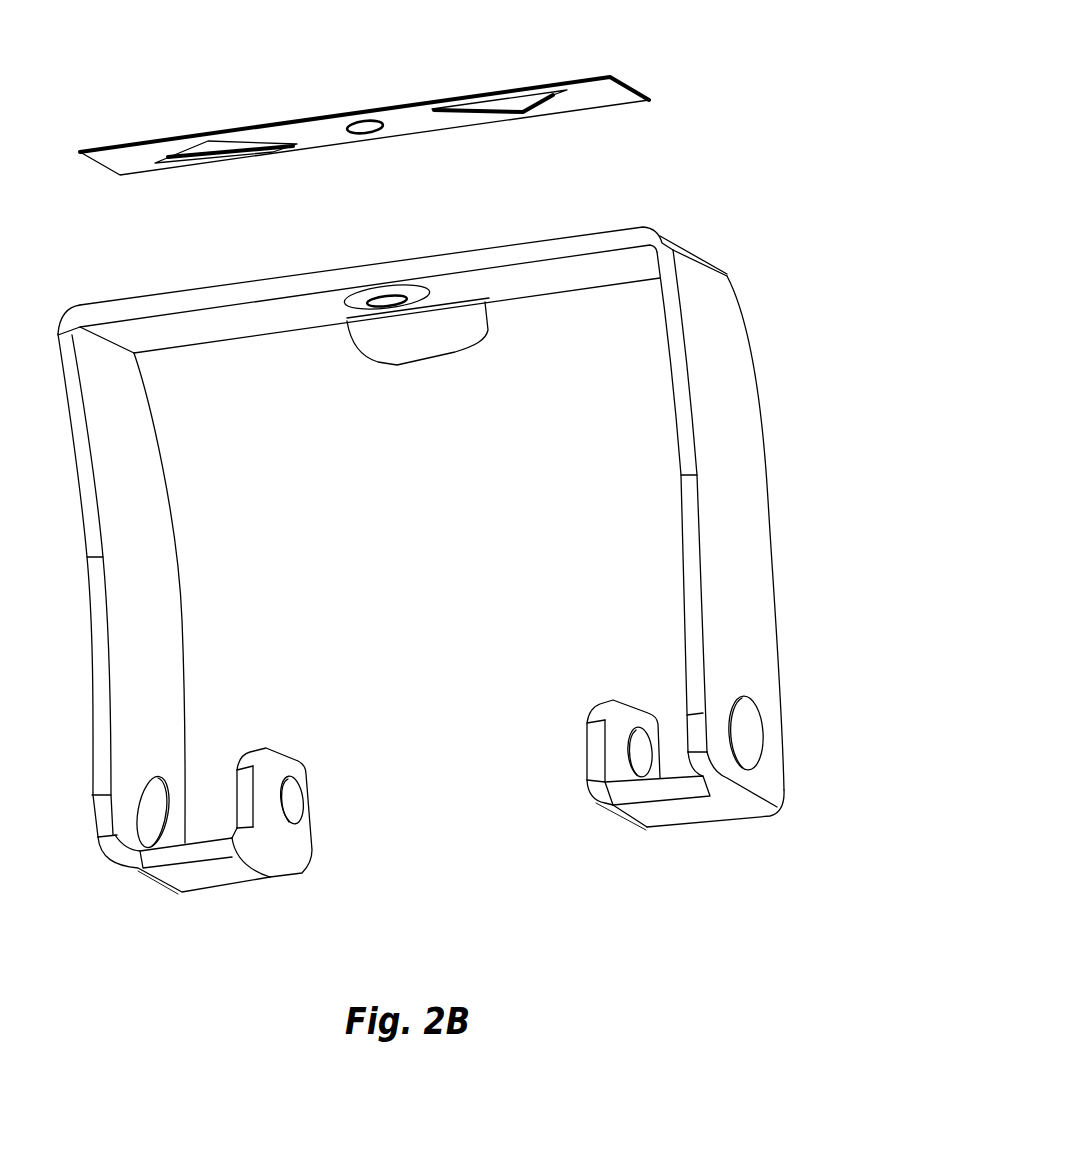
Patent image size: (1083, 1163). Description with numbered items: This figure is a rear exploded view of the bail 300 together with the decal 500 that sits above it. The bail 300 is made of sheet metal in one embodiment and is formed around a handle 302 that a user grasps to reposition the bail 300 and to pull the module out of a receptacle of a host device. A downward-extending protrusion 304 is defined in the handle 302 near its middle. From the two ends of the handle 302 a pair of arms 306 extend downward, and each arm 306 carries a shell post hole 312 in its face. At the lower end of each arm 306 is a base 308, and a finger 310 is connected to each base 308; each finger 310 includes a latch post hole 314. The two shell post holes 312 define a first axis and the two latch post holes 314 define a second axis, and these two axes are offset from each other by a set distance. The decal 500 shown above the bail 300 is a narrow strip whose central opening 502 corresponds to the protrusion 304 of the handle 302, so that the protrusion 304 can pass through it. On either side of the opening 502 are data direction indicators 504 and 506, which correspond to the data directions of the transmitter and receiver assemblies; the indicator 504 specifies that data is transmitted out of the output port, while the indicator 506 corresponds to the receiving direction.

The bail 300 is at (475, 590).
The handle 302 is at (546, 278).
The downward-extending protrusion 304 is at (346, 302).
The arms 306 is at (153, 622).
The bases 308 is at (212, 873).
The fingers 310 is at (248, 760).
The shell post hole 312 is at (150, 777).
The latch post hole 314 is at (288, 758).
The decal 500 is at (401, 124).
The opening 502 is at (375, 133).
The data direction indicator 504 is at (545, 103).
The data direction indicator 506 is at (152, 167).